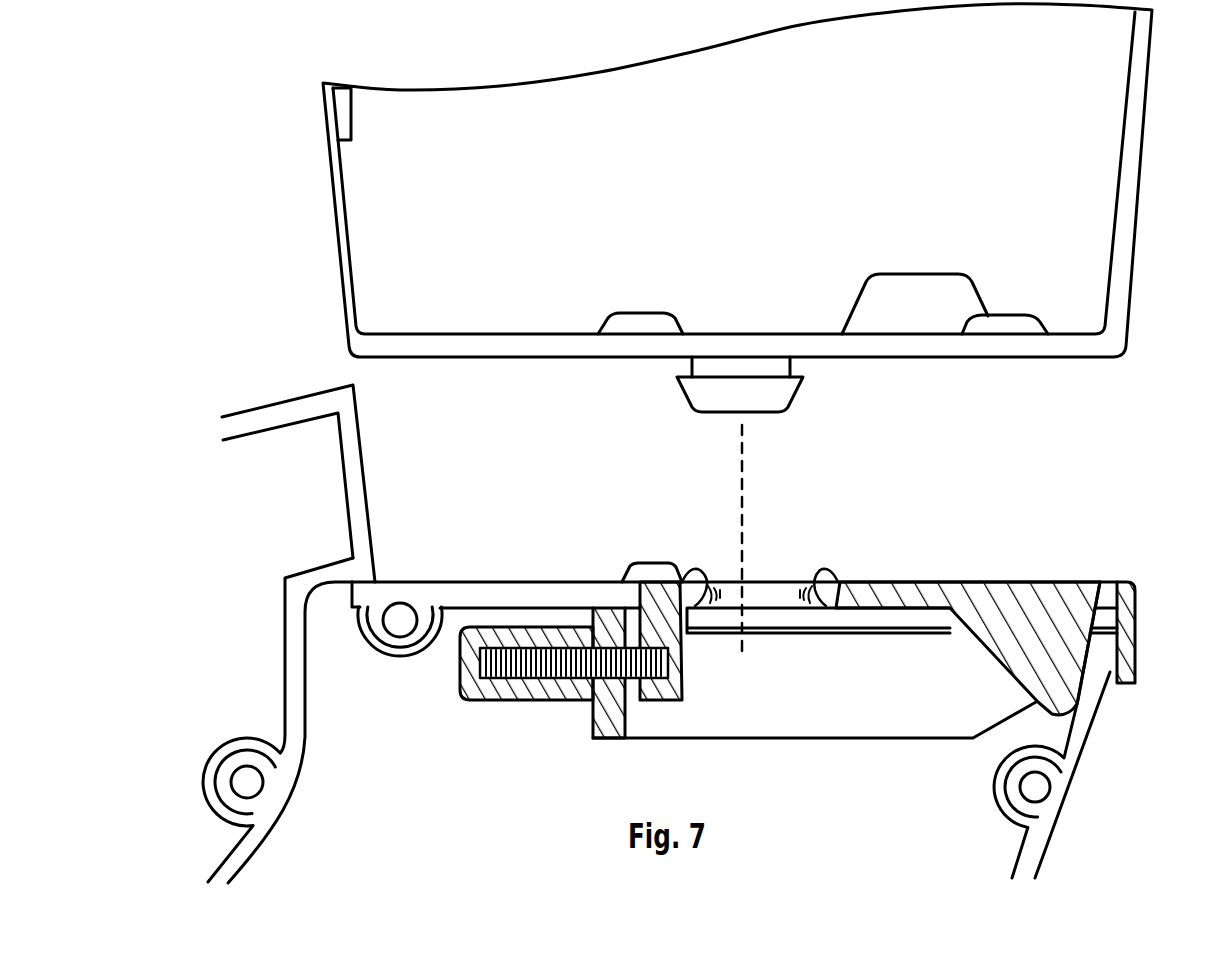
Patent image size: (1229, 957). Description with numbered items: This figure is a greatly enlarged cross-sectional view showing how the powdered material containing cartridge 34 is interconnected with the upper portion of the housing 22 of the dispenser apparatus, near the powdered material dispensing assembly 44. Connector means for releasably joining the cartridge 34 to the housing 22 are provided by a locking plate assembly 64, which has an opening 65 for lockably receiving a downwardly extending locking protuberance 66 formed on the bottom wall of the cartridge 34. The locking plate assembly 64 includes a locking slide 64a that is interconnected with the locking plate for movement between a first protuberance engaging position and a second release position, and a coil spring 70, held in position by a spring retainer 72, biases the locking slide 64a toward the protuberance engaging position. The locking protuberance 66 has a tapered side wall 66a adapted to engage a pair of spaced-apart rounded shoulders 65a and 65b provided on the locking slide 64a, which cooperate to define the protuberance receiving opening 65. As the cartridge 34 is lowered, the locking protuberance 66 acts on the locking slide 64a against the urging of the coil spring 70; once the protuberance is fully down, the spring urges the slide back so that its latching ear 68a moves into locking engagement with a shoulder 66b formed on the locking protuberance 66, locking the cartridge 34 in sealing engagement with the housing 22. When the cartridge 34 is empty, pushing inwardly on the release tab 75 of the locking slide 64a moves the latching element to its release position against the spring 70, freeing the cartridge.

The housing 22 is at (1092, 745).
The powdered material containing cartridge 34 is at (1143, 156).
The powdered material dispensing assembly 44 is at (252, 386).
The locking plate assembly 64 is at (483, 574).
The locking slide 64a is at (650, 565).
The opening 65 is at (706, 585).
The rounded shoulder 65a is at (686, 578).
The rounded shoulder 65b is at (822, 588).
The locking protuberance 66 is at (690, 368).
The tapered side wall 66a is at (790, 400).
The shoulder 66b is at (763, 368).
The latching ear 68a is at (690, 630).
The coil spring 70 is at (553, 682).
The spring retainer 72 is at (478, 700).
The release tab 75 is at (1136, 632).